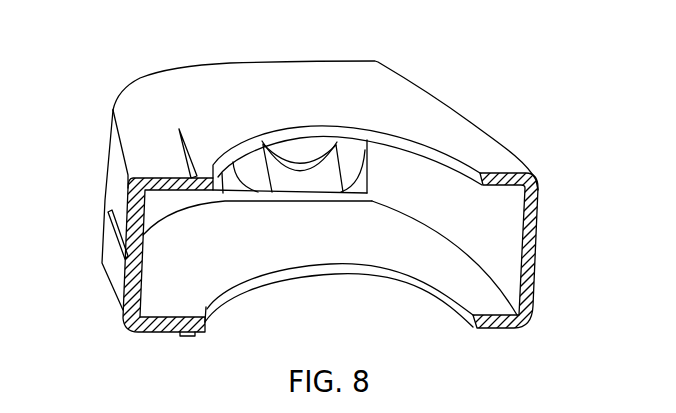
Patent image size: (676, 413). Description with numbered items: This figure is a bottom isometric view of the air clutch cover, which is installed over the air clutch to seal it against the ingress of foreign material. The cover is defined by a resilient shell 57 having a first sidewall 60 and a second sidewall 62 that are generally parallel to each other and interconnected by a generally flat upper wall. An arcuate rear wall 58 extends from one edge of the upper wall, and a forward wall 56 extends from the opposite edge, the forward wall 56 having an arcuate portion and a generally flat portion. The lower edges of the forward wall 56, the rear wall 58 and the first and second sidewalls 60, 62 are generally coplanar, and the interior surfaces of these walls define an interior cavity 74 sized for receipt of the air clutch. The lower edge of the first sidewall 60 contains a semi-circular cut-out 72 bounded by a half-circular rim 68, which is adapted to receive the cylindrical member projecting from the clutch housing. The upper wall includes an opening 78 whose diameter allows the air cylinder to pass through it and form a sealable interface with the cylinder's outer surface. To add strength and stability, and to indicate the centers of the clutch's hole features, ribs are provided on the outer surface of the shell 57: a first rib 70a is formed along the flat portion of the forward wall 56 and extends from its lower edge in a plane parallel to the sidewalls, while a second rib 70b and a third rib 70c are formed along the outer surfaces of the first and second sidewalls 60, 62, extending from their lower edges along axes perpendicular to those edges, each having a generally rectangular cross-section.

The forward wall 56 is at (117, 168).
The shell 57 is at (198, 66).
The arcuate rear wall 58 is at (538, 202).
The first sidewall 60 is at (279, 102).
The second sidewall 62 is at (311, 248).
The half-circular rim 68 is at (380, 135).
The first rib 70a is at (128, 250).
The second rib 70b is at (182, 165).
The third rib 70c is at (188, 337).
The semi-circular cut-out 72 is at (291, 306).
The interior cavity 74 is at (376, 239).
The opening 78 is at (298, 153).